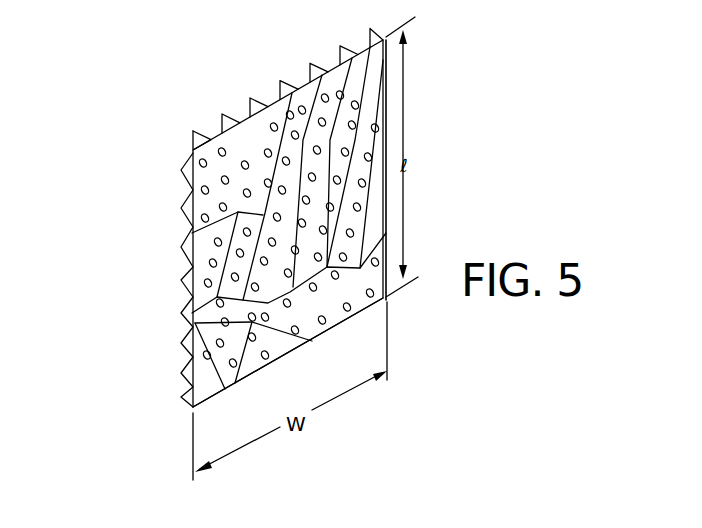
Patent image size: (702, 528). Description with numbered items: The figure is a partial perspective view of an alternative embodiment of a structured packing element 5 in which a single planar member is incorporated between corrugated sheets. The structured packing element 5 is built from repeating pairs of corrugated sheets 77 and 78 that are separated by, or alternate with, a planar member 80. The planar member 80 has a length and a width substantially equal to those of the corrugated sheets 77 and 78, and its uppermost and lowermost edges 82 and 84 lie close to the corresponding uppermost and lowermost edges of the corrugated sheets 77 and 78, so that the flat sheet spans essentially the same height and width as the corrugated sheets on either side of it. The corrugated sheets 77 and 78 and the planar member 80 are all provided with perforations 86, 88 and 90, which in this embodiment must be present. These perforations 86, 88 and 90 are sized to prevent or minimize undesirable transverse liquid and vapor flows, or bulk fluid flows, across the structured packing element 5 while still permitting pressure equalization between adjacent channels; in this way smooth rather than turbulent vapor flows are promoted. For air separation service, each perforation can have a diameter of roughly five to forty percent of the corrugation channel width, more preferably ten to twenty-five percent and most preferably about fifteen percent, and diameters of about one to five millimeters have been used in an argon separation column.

The structured packing element 5 is at (110, 252).
The corrugated sheet 77 is at (183, 140).
The corrugated sheet 78 is at (384, 98).
The planar member 80 is at (188, 200).
The uppermost edge 82 is at (231, 117).
The lowermost edge 84 is at (323, 337).
The perforations 86 is at (205, 353).
The perforations 88 is at (193, 280).
The perforations 90 is at (190, 158).